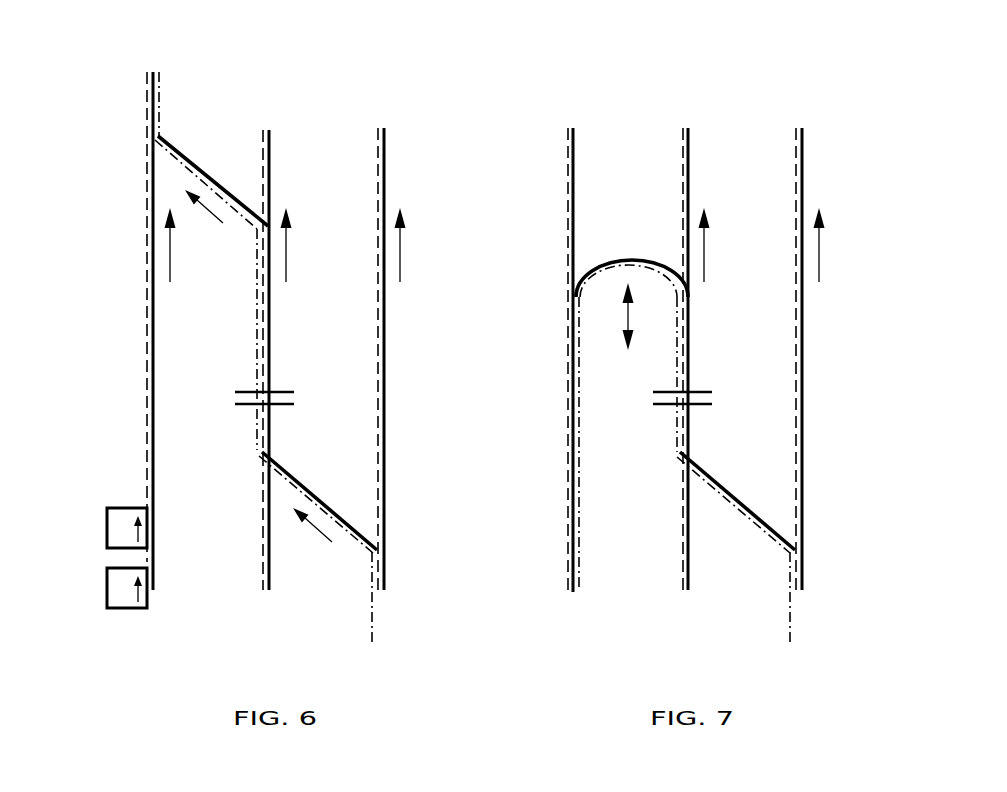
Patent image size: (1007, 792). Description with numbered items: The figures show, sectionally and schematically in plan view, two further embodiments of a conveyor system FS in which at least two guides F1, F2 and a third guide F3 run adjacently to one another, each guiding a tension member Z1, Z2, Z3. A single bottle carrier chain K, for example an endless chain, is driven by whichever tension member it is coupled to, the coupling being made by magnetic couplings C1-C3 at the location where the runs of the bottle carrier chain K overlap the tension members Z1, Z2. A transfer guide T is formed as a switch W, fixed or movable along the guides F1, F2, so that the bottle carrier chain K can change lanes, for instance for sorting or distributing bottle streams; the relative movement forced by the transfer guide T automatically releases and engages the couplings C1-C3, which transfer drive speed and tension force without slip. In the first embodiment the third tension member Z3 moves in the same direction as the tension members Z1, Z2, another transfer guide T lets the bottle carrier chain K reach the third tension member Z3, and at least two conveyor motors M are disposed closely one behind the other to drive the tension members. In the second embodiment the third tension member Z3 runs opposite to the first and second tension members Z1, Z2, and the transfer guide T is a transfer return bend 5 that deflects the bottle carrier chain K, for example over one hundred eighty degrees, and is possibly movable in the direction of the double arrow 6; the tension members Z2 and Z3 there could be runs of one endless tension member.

In FIG. 6, the guide F1 is at (384, 157).
In FIG. 7, the guide F1 is at (802, 157).
In FIG. 6, the guide F2 is at (269, 157).
In FIG. 7, the guide F2 is at (688, 157).
In FIG. 6, the guide F3 is at (153, 78).
In FIG. 7, the guide F3 is at (573, 157).
In FIG. 6, the conveyor system FS is at (420, 113).
In FIG. 7, the conveyor system FS is at (838, 113).
In FIG. 6, the bottle carrier chain K is at (160, 103).
In FIG. 7, the bottle carrier chain K is at (573, 343).
In FIG. 6, the transfer guide T is at (209, 178).
In FIG. 7, the transfer guide T is at (617, 258).
In FIG. 6, the switch W is at (347, 512).
In FIG. 7, the switch W is at (763, 512).
In FIG. 6, the first tension member Z1 is at (384, 325).
In FIG. 7, the first tension member Z1 is at (802, 325).
In FIG. 6, the second tension member Z2 is at (269, 312).
In FIG. 7, the second tension member Z2 is at (690, 268).
In FIG. 6, the third tension member Z3 is at (153, 295).
In FIG. 7, the third tension member Z3 is at (573, 487).
In FIG. 6, the magnetic couplings C1-C3 is at (263, 357).
In FIG. 7, the magnetic couplings C1-C3 is at (680, 360).
In FIG. 6, the conveyor motors M is at (107, 531).
In FIG. 7, the transfer return bend 5 is at (640, 258).
In FIG. 7, the double arrow 6 is at (627, 318).